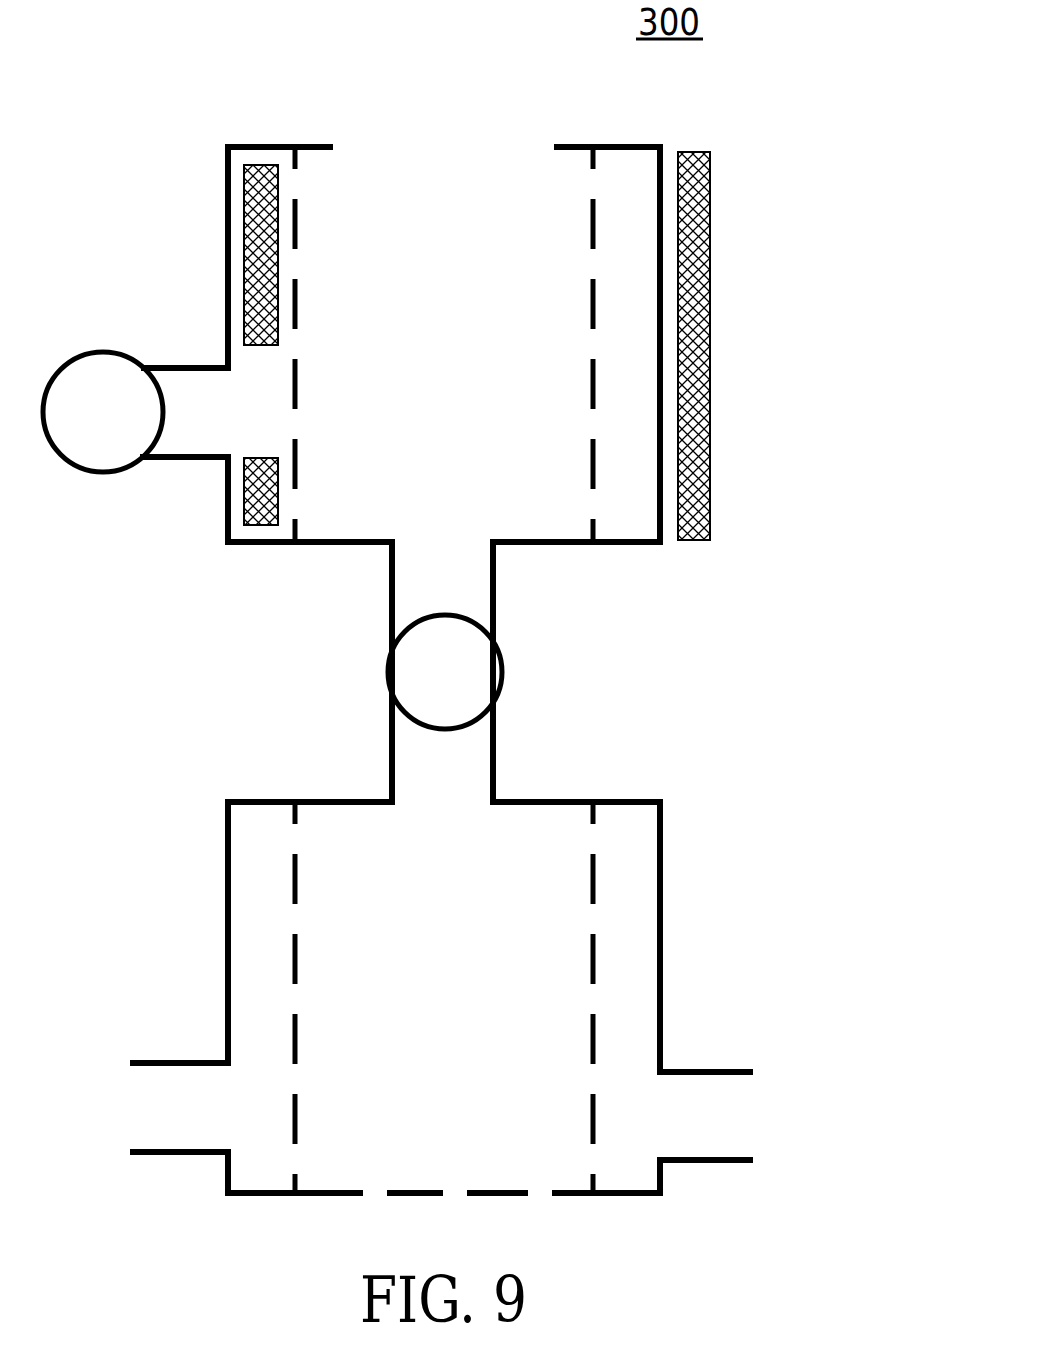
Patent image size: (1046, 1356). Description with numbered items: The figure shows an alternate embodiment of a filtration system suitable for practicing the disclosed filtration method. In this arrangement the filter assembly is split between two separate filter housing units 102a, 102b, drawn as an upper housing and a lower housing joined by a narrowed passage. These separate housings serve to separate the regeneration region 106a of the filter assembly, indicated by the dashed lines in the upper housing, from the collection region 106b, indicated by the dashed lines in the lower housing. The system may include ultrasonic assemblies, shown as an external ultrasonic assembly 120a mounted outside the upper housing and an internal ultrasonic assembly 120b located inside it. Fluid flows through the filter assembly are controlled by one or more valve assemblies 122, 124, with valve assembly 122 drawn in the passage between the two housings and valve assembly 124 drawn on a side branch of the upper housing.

The filter housing unit 102a is at (536, 474).
The filter housing unit 102b is at (489, 997).
The regeneration region 106a is at (562, 344).
The collection region 106b is at (570, 997).
The external ultrasonic assembly 120a is at (779, 346).
The internal ultrasonic assembly 120b is at (158, 345).
The valve assembly 122 is at (539, 663).
The valve assembly 124 is at (164, 490).